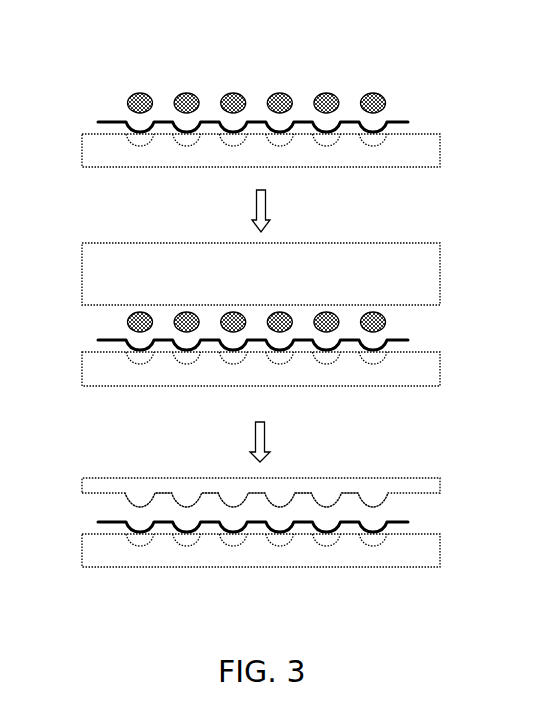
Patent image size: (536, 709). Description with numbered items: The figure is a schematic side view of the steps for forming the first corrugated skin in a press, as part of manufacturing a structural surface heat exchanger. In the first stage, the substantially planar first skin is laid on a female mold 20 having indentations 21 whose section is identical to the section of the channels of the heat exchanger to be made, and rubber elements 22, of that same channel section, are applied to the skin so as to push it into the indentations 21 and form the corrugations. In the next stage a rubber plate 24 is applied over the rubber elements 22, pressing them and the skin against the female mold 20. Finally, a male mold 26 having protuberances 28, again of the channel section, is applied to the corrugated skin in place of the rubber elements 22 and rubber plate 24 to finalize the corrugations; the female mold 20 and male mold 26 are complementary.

The female mold 20 is at (428, 151).
The indentations 21 is at (372, 141).
The rubber elements 22 is at (369, 92).
The rubber plate 24 is at (428, 277).
The male mold 26 is at (428, 487).
The protuberances 28 is at (373, 500).